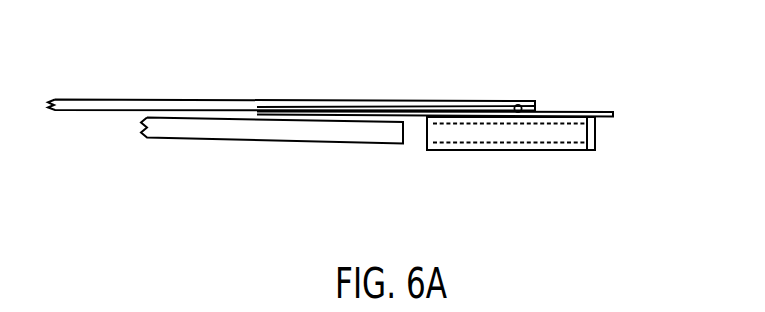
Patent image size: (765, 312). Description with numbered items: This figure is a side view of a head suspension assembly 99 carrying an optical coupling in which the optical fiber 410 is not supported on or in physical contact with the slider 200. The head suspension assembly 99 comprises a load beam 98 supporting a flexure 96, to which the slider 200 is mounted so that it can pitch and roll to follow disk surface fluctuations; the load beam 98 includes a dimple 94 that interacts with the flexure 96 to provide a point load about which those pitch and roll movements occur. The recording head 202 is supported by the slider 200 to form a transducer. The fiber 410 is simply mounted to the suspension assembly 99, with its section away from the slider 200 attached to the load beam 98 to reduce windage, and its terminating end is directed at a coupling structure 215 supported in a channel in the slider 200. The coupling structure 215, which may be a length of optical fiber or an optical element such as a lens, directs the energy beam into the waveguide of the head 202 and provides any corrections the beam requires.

The head suspension assembly 99 is at (163, 78).
The load beam 98 is at (422, 100).
The dimple 94 is at (518, 104).
The flexure 96 is at (603, 111).
The optical fiber 410 is at (203, 128).
The slider 200 is at (557, 180).
The coupling structure 215 is at (549, 145).
The recording head 202 is at (593, 136).